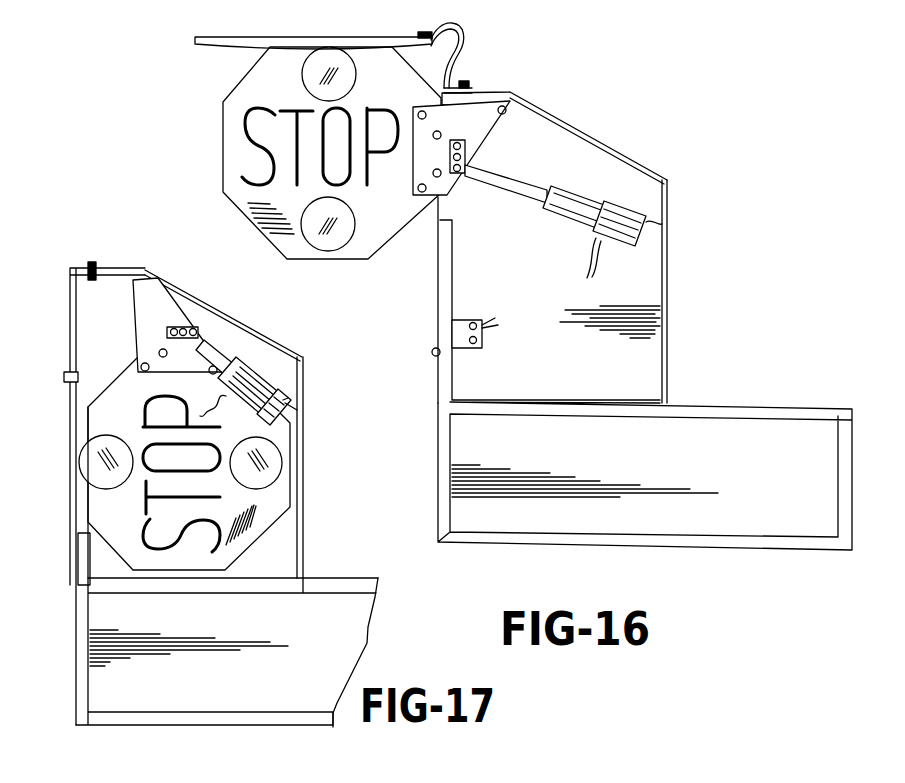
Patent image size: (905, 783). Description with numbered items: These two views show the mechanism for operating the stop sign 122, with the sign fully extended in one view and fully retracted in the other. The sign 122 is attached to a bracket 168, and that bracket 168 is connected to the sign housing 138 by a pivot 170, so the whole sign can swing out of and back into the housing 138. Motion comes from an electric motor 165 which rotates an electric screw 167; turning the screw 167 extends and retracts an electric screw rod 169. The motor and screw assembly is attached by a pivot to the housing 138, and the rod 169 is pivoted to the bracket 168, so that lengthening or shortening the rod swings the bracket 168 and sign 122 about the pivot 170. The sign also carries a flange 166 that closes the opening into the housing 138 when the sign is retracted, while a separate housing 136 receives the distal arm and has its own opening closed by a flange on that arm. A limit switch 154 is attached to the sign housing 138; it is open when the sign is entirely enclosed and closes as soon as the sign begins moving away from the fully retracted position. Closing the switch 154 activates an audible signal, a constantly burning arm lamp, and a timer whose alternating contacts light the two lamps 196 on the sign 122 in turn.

In FIG. 16, the sign 122 is at (222, 140).
In FIG. 17, the sign 122 is at (128, 525).
In FIG. 16, the housing 136 is at (800, 403).
In FIG. 17, the housing 136 is at (345, 648).
In FIG. 16, the housing 138 is at (648, 278).
In FIG. 17, the housing 138 is at (302, 385).
In FIG. 16, the limit switch 154 is at (483, 340).
In FIG. 16, the electric motor 165 is at (592, 236).
In FIG. 17, the electric motor 165 is at (226, 392).
In FIG. 16, the flange 166 is at (261, 37).
In FIG. 17, the flange 166 is at (66, 386).
In FIG. 16, the electric screw 167 is at (593, 210).
In FIG. 17, the electric screw 167 is at (245, 357).
In FIG. 16, the bracket 168 is at (483, 126).
In FIG. 17, the bracket 168 is at (166, 326).
In FIG. 16, the electric screw rod 169 is at (490, 187).
In FIG. 16, the pivot 170 is at (510, 92).
In FIG. 17, the pivot 170 is at (138, 270).
In FIG. 16, the lamps 196 is at (347, 68).
In FIG. 17, the lamps 196 is at (134, 440).